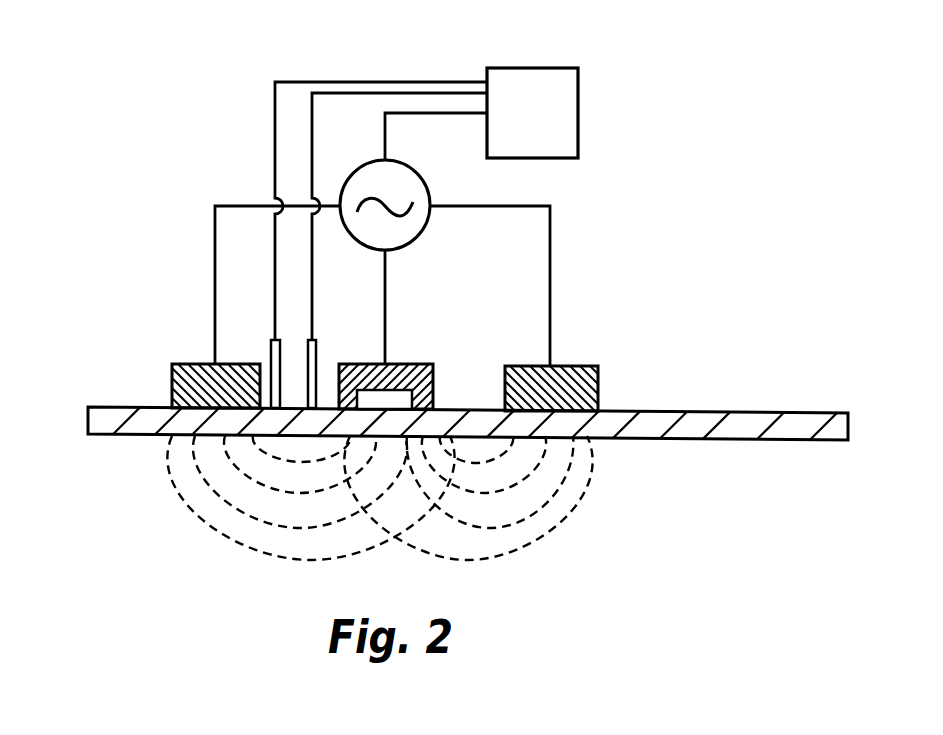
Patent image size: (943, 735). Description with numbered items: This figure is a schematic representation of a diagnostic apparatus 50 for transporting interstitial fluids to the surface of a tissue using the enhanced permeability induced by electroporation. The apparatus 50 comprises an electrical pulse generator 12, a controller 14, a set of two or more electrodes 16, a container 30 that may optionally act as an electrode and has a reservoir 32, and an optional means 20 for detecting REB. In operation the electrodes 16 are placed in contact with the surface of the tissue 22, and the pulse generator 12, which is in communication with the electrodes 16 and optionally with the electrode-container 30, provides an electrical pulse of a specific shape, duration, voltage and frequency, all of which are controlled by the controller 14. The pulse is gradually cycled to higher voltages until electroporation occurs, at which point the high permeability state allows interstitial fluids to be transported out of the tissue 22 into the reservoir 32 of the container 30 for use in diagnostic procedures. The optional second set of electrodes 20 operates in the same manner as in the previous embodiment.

The electrical pulse generator 12 is at (417, 173).
The controller 14 is at (538, 68).
The electrodes 16 is at (186, 364).
The means for detecting REB 20 is at (307, 350).
The tissue 22 is at (740, 412).
The container 30 is at (424, 364).
The reservoir 32 is at (397, 400).
The diagnostic apparatus 50 is at (645, 131).